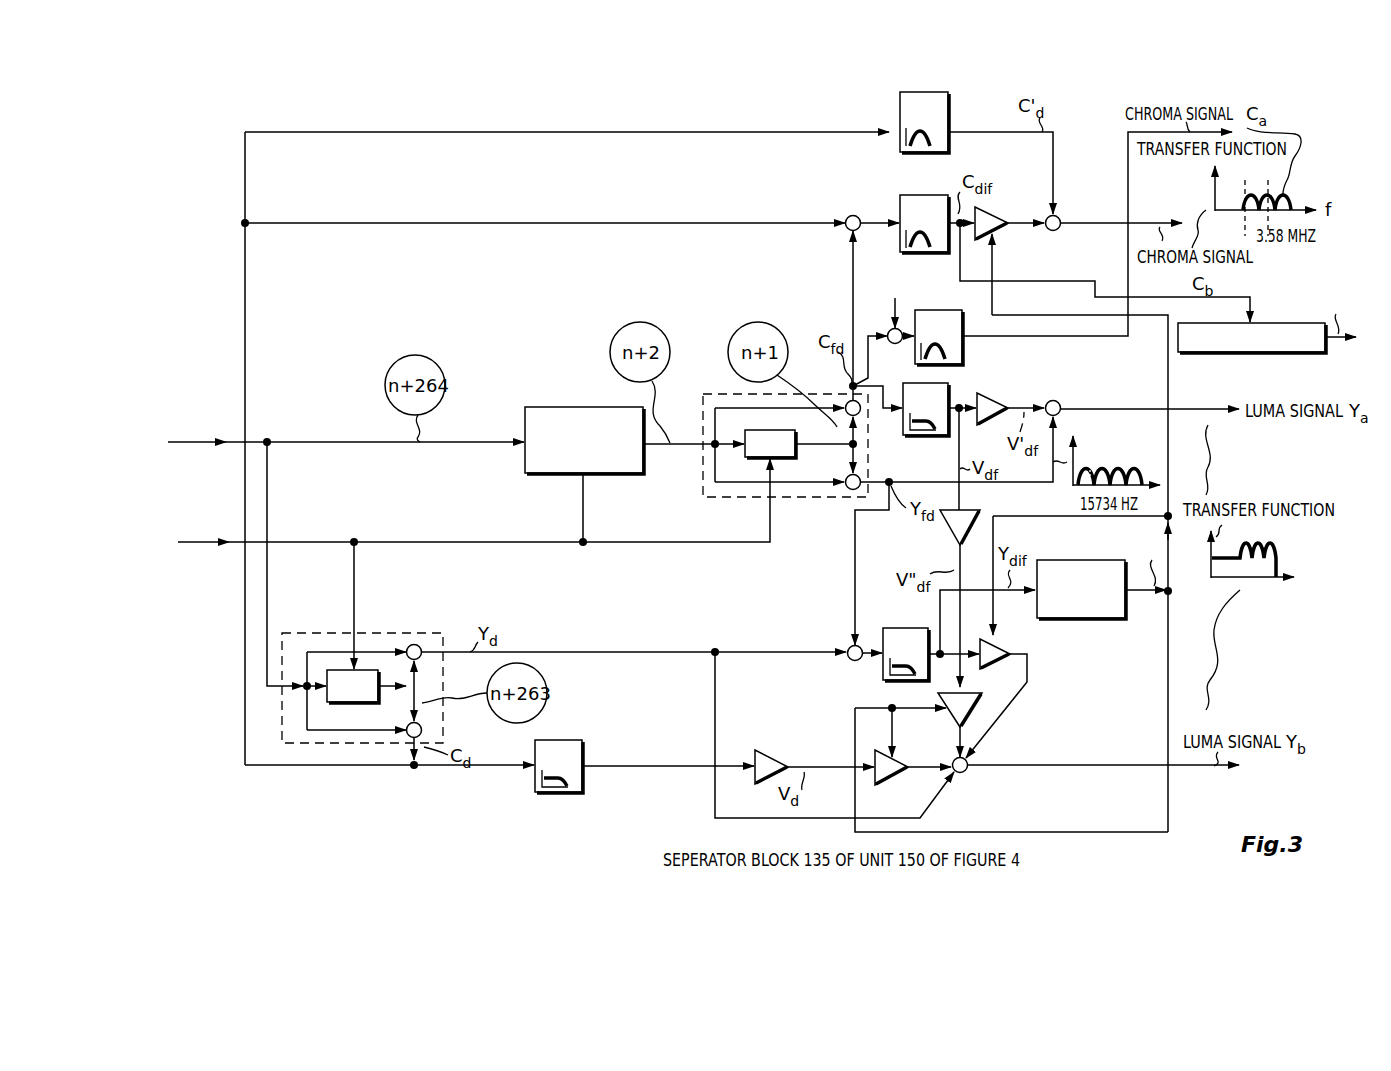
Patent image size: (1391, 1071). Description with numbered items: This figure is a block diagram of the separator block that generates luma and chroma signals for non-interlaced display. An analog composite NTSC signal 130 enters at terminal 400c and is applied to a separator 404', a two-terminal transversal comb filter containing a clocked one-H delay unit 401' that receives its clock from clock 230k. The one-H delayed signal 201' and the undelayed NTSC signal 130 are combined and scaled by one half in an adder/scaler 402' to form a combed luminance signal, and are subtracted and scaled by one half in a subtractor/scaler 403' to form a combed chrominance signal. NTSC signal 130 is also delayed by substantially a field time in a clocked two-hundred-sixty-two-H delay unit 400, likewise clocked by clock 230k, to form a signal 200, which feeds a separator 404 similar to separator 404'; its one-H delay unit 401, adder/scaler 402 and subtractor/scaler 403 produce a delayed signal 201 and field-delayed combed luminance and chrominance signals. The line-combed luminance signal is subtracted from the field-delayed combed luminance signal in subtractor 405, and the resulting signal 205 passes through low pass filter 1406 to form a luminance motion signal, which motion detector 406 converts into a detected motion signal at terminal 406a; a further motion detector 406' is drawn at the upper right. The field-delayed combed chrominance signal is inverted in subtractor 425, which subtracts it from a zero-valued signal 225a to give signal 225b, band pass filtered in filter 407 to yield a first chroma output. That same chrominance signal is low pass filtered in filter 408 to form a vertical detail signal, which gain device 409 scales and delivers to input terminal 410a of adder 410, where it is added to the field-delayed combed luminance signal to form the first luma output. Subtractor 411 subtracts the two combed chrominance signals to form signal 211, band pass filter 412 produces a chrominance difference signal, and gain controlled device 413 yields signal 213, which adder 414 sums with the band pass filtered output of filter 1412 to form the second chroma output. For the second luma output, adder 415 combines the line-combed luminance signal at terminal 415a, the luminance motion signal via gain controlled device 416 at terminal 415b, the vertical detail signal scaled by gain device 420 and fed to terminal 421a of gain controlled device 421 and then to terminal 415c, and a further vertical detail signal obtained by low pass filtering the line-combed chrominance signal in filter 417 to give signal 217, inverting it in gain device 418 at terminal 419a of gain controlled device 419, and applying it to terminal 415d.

The NTSC signal 130 is at (192, 442).
The clock 230k is at (186, 547).
The 262-H delay unit 400 is at (570, 407).
The terminal 400c is at (274, 440).
The signal 200 is at (692, 446).
The 1-H delay 401 is at (738, 413).
The subtractor 402 is at (788, 403).
The adder 403 is at (884, 474).
The separator 404 is at (766, 462).
The signal 201 is at (857, 445).
The subtractor 411 is at (854, 215).
The signal 211 is at (885, 206).
The band pass filter 412 is at (924, 196).
The band pass filter 1412 is at (949, 106).
The gain controlled device 413 is at (998, 215).
The signal 213 is at (1020, 230).
The adder 414 is at (1060, 224).
The subtractor 425 is at (890, 312).
The signal 225a is at (899, 298).
The signal 225b is at (902, 344).
The band pass filter 407 is at (930, 314).
The low pass filter 408 is at (952, 387).
The gain device 409 is at (998, 393).
The input terminal 410a is at (1052, 399).
The adder 410 is at (1074, 409).
The gain device 420 is at (940, 528).
The motion detector 406 is at (1038, 593).
The terminal 406a is at (1126, 618).
The motion detector 406' is at (1267, 339).
The subtractor 405 is at (852, 660).
The signal 205 is at (862, 645).
The low pass filter 1406 is at (912, 630).
The gain controlled device 416 is at (1004, 644).
The gain controlled device 421 is at (980, 707).
The input terminal 421a is at (962, 689).
The adder 415 is at (968, 774).
The input terminal 415a is at (955, 788).
The input terminal 415b is at (974, 762).
The input terminal 415c is at (980, 733).
The input terminal 415d is at (948, 762).
The gain controlled device 419 is at (895, 786).
The input terminal 419a is at (872, 774).
The gain device 418 is at (768, 751).
The low pass filter 417 is at (584, 750).
The signal 217 is at (666, 768).
The 1-H delay unit 401' is at (335, 665).
The adder/scaler 402' is at (366, 637).
The subtractor/scaler 403' is at (401, 733).
The separator 404' is at (390, 667).
The 1-H delayed signal 201' is at (437, 689).